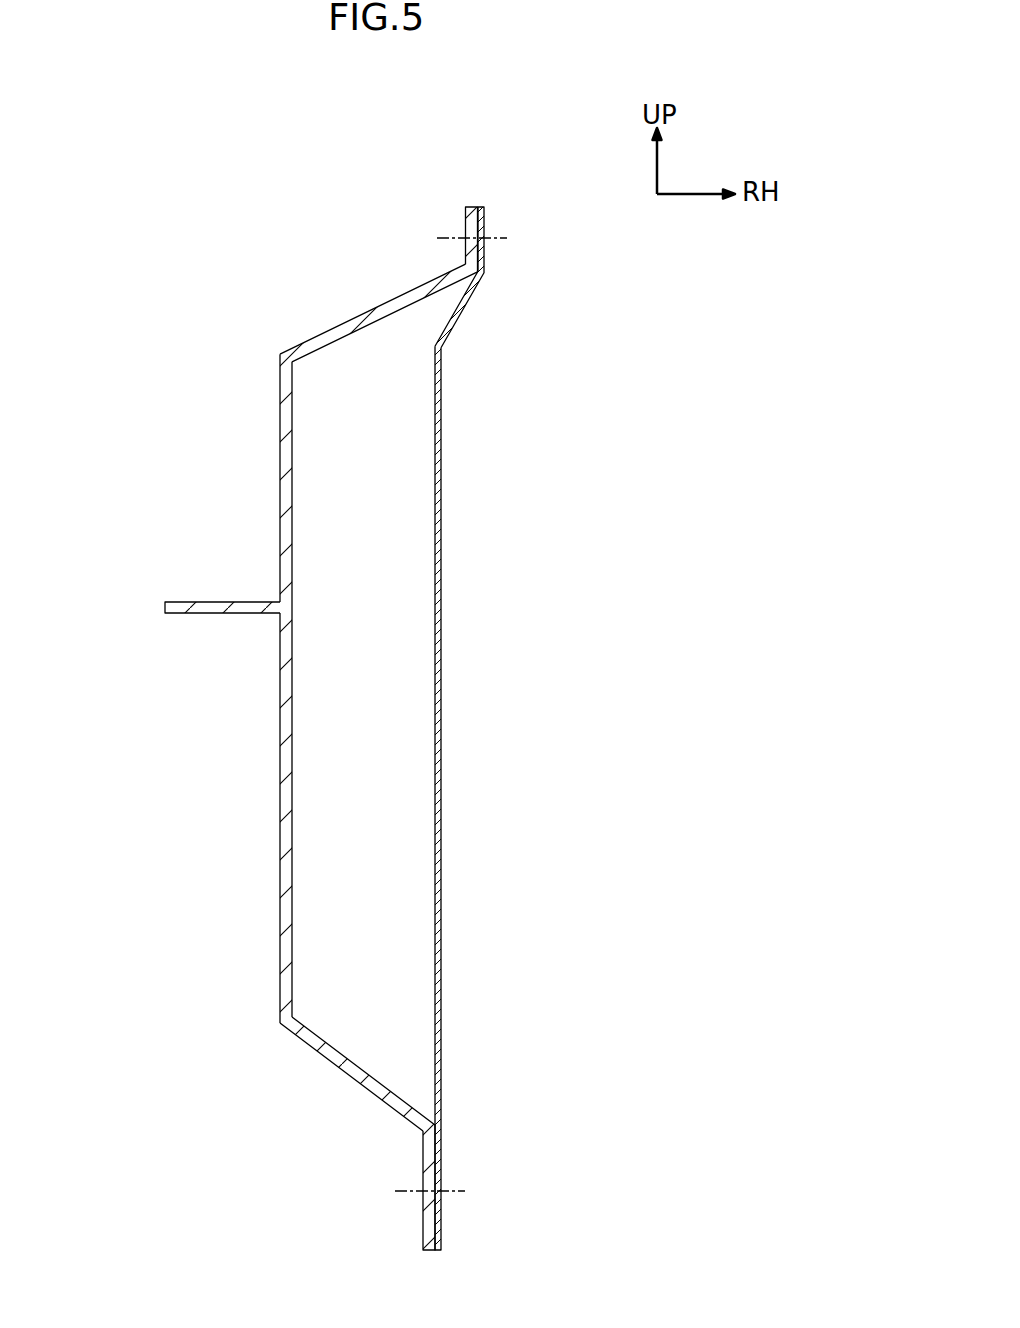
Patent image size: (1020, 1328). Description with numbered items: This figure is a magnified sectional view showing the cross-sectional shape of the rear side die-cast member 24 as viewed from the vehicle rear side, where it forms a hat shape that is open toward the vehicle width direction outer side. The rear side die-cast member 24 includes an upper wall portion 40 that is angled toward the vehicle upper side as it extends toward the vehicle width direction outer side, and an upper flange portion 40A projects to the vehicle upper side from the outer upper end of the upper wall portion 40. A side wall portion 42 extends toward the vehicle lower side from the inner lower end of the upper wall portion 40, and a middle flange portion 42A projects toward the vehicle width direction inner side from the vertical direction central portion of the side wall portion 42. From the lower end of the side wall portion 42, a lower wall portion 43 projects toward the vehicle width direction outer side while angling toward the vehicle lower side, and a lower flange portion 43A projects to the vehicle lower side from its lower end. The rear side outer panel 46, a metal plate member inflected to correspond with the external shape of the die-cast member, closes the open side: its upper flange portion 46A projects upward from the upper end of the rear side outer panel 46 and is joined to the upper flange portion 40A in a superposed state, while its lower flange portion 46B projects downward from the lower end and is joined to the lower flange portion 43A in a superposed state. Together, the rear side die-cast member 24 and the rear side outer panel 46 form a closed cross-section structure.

The rear side die-cast member 24 is at (369, 703).
The upper wall portion 40 is at (360, 318).
The upper flange portion 40A is at (465, 222).
The side wall portion 42 is at (279, 840).
The middle flange portion 42A is at (197, 602).
The lower wall portion 43 is at (340, 1070).
The lower flange portion 43A is at (423, 1215).
The rear side outer panel 46 is at (442, 737).
The upper flange portion 46A is at (484, 253).
The lower flange portion 46B is at (441, 1232).